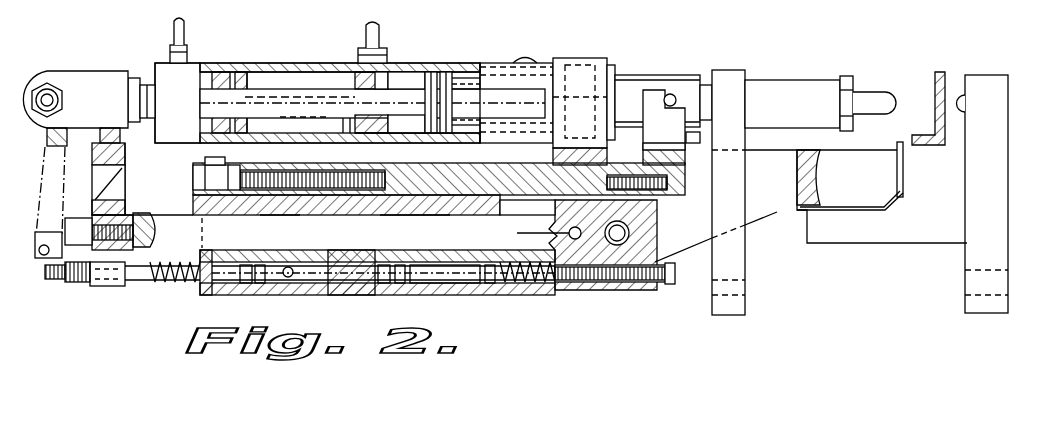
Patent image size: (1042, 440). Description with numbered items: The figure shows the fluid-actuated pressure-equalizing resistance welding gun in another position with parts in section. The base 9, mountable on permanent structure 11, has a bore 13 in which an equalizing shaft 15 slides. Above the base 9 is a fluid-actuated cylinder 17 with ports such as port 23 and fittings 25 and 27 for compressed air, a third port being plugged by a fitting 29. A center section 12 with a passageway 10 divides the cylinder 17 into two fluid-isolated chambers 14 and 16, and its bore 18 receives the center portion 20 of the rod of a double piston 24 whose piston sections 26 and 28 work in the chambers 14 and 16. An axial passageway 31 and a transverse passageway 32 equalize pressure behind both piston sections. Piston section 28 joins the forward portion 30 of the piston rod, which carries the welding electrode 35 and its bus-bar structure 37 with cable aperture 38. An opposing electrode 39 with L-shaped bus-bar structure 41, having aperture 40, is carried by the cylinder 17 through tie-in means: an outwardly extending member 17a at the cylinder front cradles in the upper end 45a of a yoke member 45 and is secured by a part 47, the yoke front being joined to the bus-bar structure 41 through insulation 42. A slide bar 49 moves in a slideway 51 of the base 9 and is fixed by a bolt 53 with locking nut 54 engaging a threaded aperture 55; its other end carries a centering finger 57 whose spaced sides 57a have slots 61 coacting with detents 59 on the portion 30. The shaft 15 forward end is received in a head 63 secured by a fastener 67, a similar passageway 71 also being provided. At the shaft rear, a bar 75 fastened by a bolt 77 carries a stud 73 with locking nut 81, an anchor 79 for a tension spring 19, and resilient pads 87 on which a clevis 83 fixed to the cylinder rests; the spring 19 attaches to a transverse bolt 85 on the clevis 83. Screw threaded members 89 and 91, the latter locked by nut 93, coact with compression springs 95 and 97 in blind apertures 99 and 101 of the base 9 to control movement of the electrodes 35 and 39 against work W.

The base 9 is at (217, 287).
The passageway 10 is at (406, 102).
The permanent structure 11 is at (487, 290).
The center section 12 is at (375, 136).
The bore 13 is at (370, 237).
The chamber 14 is at (283, 77).
The equalizing shaft 15 is at (163, 213).
The chamber 16 is at (478, 70).
The fluid-actuated cylinder 17 is at (260, 63).
The outwardly extending member 17a is at (613, 72).
The bore 18 is at (347, 118).
The tension spring 19 is at (37, 233).
The center portion of the piston rod 20 is at (307, 92).
The port 23 is at (385, 70).
The double piston 24 is at (435, 77).
The fitting 25 is at (185, 30).
The piston section 26 is at (257, 55).
The fitting 27 is at (372, 33).
The piston section 28 is at (455, 92).
The fitting 29 is at (523, 60).
The forward portion of the piston rod 30 is at (640, 80).
The axial passageway 31 is at (285, 118).
The transverse passageway 32 is at (413, 72).
The welding electrode 35 is at (857, 90).
The bus-bar structure 37 is at (760, 78).
The aperture 38 is at (748, 292).
The opposing electrode 39 is at (967, 100).
The cable-connecting aperture 40 is at (968, 292).
The L-shaped bus-bar structure 41 is at (882, 235).
The insulation 42 is at (903, 170).
The yoke member 45 is at (777, 212).
The upper end of the yoke member 45a is at (470, 113).
The part 47 is at (582, 58).
The slide bar 49 is at (520, 167).
The slideway 51 is at (282, 216).
The bolt 53 is at (280, 177).
The locking nut 54 is at (225, 175).
The threaded aperture 55 is at (415, 216).
The centering finger 57 is at (697, 138).
The spaced sides 57a is at (673, 96).
The pin or detent 59 is at (705, 83).
The slot 61 is at (657, 112).
The head 63 is at (600, 292).
The fastener 67 is at (630, 231).
The passageway 71 is at (538, 222).
The stud 73 is at (167, 282).
The bar 75 is at (113, 152).
The bolt 77 is at (123, 170).
The anchor 79 is at (60, 265).
The locking nut 81 is at (147, 283).
The clevis 83 is at (78, 73).
The transverse bolt 85 is at (45, 95).
The resilient pads 87 is at (117, 128).
The screw threaded member 89 is at (83, 277).
The screw threaded member 91 is at (667, 272).
The locking nut 93 is at (663, 287).
The compression spring 95 is at (200, 287).
The compression spring 97 is at (537, 287).
The blind aperture 99 is at (287, 284).
The blind aperture 101 is at (410, 282).
The work W is at (942, 70).